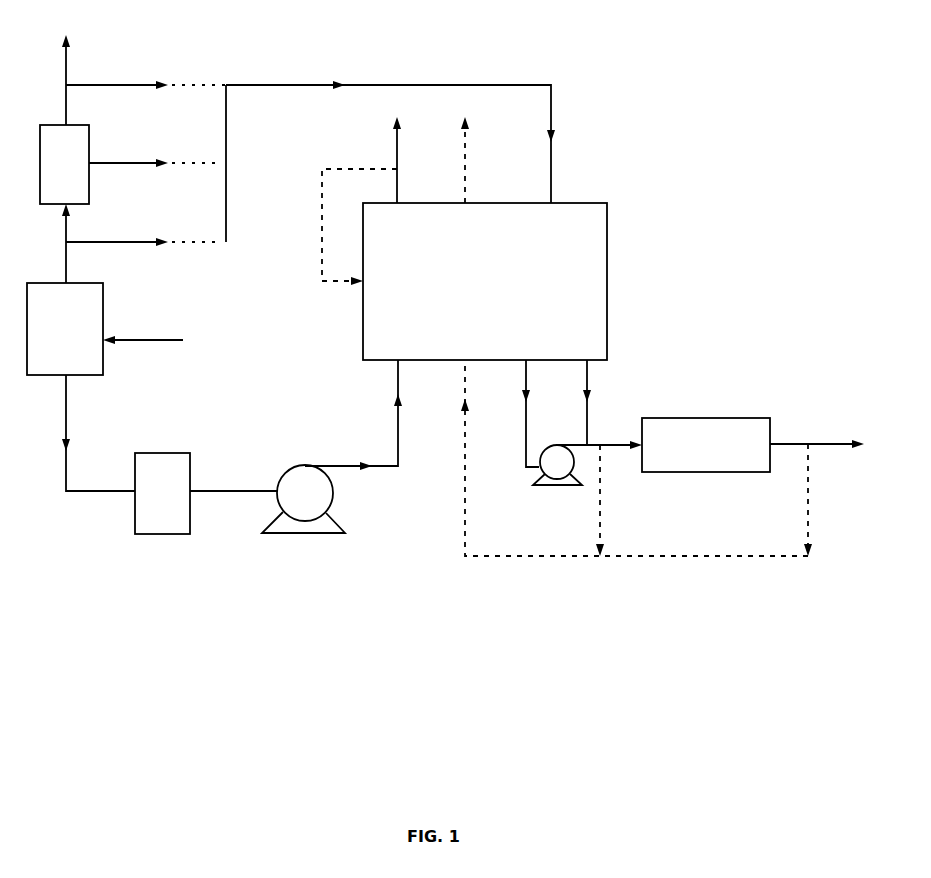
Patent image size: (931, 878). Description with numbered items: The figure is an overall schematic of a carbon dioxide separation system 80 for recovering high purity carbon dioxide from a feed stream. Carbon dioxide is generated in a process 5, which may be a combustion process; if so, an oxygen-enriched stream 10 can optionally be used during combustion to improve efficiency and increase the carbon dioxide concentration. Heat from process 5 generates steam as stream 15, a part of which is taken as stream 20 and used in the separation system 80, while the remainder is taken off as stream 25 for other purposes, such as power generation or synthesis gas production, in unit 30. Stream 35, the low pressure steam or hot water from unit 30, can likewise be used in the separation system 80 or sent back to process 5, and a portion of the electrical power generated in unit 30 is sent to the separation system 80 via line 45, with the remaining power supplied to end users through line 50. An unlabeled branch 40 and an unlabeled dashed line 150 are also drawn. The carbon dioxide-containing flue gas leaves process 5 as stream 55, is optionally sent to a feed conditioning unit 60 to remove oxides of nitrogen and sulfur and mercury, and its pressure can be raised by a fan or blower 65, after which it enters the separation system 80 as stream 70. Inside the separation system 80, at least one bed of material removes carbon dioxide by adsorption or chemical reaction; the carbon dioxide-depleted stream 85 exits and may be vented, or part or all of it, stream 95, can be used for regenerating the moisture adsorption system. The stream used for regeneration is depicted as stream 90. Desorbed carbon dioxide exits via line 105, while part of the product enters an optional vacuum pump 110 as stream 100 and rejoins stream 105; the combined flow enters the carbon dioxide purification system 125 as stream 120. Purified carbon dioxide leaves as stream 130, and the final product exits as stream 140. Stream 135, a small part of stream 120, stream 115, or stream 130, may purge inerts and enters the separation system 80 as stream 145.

The process 5 is at (103, 358).
The oxygen-enriched stream 10 is at (143, 340).
The steam stream 15 is at (66, 252).
The steam stream portion 20 is at (115, 245).
The remaining steam stream 25 is at (66, 222).
The unit 30 is at (89, 190).
The low pressure stream 35 is at (154, 155).
The overhead stream 40 is at (66, 98).
The electrical power line 45 is at (130, 84).
The electrical power line 50 is at (67, 49).
The CO2 containing stream 55 is at (66, 393).
The feed conditioning unit 60 is at (180, 534).
The fan or blower 65 is at (318, 533).
The feed stream 70 is at (398, 440).
The CO2 separation system 80 is at (607, 294).
The CO2-depleted stream 85 is at (397, 157).
The regeneration stream 90 is at (551, 157).
The CO2-depleted stream portion 95 is at (322, 235).
The CO2 product stream portion 100 is at (526, 413).
The desorbed CO2 line 105 is at (587, 402).
The vacuum pump 110 is at (545, 486).
The stream 115 is at (600, 505).
The CO2 product stream 120 is at (603, 446).
The CO2 purification system 125 is at (712, 472).
The purified CO2 stream 130 is at (797, 444).
The purge stream 135 is at (808, 478).
The CO2 product stream 140 is at (881, 446).
The purge inlet stream 145 is at (465, 492).
The optional overhead stream 150 is at (465, 157).